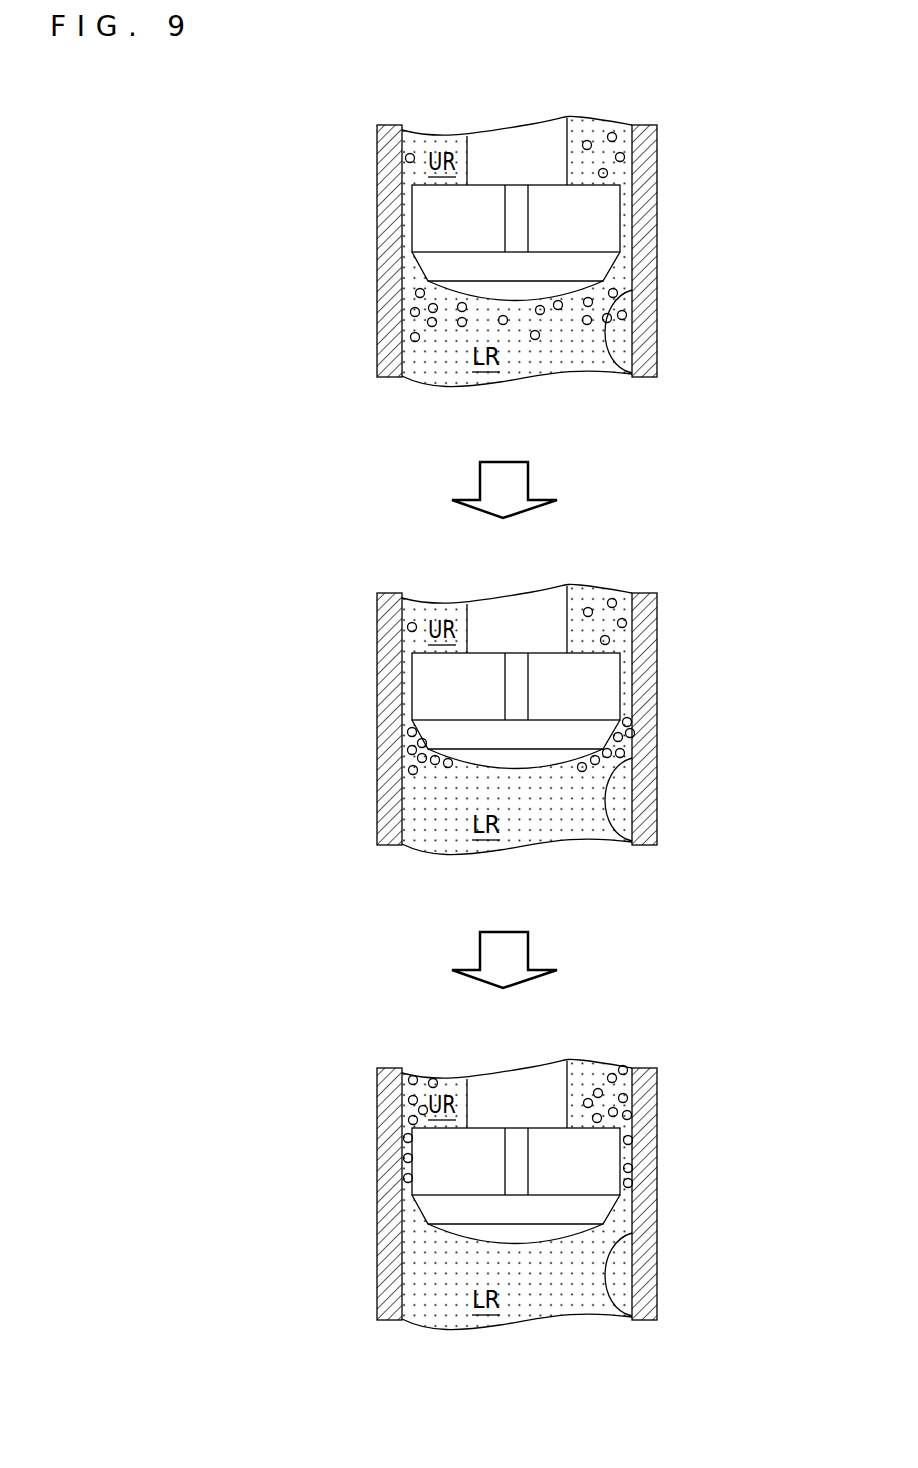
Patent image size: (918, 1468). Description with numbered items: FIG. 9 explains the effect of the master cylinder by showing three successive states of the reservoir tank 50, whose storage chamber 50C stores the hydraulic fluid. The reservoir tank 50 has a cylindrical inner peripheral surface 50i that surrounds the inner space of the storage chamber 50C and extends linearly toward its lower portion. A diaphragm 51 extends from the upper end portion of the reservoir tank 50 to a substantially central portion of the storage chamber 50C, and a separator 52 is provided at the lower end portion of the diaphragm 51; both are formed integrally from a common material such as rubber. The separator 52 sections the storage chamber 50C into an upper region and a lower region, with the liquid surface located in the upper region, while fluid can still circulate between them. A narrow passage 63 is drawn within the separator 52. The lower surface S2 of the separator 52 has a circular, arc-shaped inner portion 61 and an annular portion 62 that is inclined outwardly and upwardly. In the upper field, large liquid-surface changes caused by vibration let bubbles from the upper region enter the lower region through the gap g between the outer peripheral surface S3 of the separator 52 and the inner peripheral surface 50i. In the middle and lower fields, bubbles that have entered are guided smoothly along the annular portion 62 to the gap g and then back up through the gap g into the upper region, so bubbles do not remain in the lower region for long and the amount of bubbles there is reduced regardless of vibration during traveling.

The reservoir tank 50 is at (325, 137).
The storage chamber 50C is at (551, 384).
The inner peripheral surface 50i is at (633, 373).
The diaphragm 51 is at (480, 140).
The separator 52 is at (545, 202).
The slit / passage 63 is at (523, 195).
The outer peripheral surface S3 is at (422, 217).
The gap g is at (631, 207).
The annular portion 62 is at (435, 265).
The inner portion 61 is at (475, 290).
The lower surface S2 is at (440, 815).